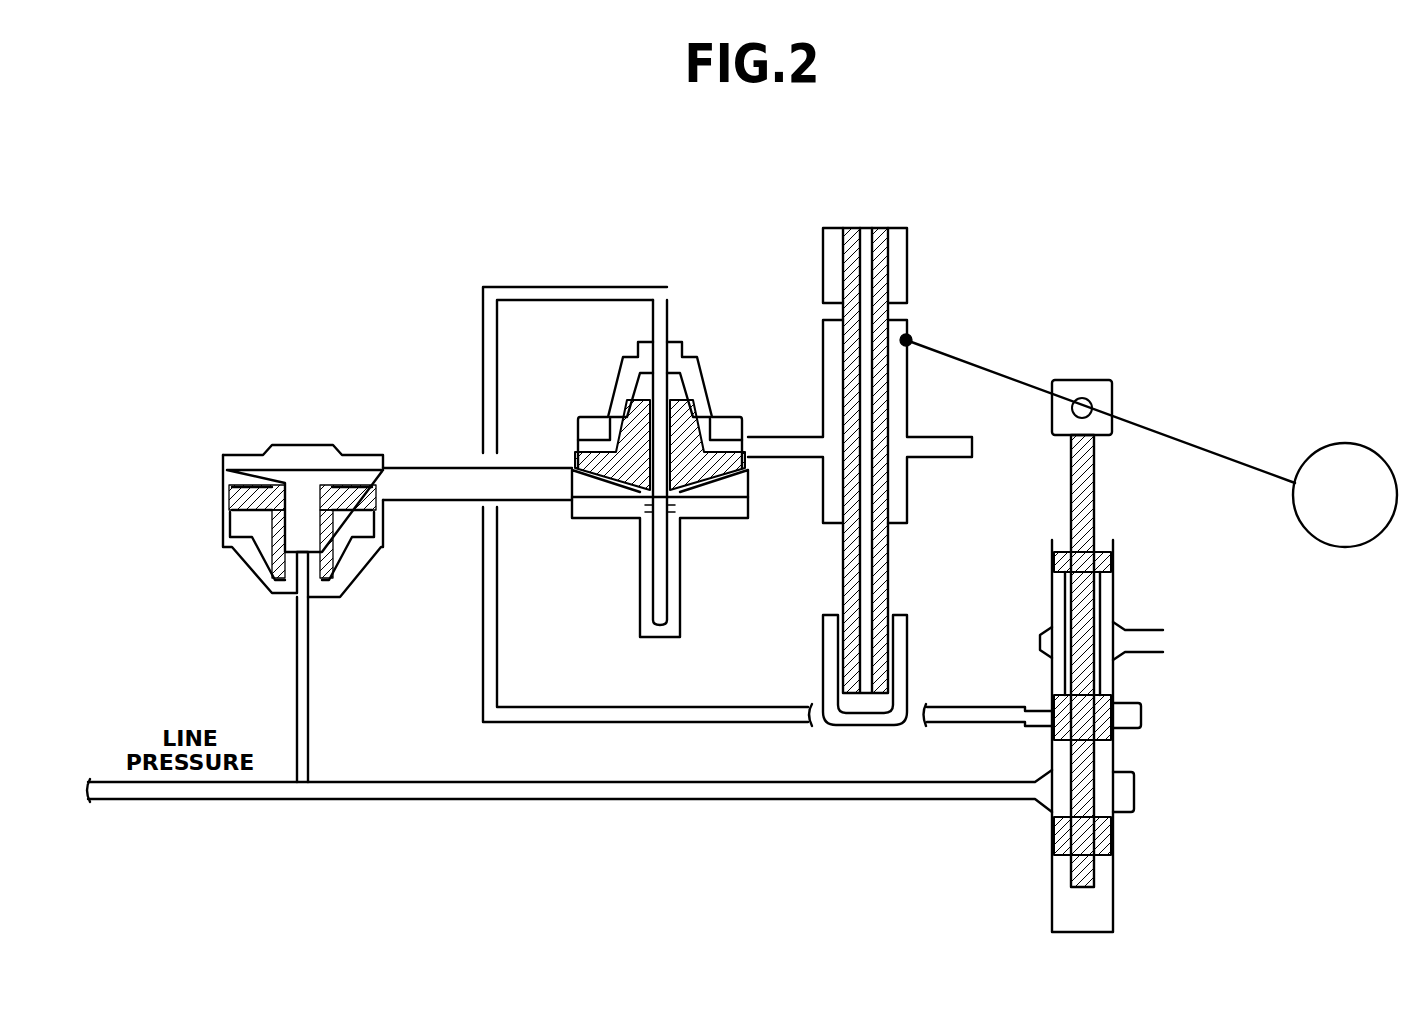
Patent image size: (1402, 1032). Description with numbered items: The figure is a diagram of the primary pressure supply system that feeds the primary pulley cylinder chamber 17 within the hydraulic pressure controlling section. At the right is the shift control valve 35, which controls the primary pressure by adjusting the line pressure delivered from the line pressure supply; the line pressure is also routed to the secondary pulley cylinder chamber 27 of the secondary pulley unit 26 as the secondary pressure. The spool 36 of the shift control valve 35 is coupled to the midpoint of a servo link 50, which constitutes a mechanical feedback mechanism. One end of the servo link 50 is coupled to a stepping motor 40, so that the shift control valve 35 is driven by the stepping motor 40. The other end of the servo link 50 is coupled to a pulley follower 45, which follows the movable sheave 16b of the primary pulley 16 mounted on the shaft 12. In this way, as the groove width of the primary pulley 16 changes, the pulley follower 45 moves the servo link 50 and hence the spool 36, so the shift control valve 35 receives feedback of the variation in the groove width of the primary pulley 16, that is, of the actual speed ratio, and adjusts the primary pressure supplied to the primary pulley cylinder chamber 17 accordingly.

The input shaft 12 is at (428, 466).
The primary pulley 16 is at (640, 414).
The movable sheave 16b is at (564, 463).
The primary pulley cylinder chamber 17 is at (630, 387).
The pulley cylinder 26 is at (275, 390).
The secondary pulley cylinder chamber 27 is at (350, 542).
The shift control valve 35 is at (1160, 762).
The spool 36 is at (1097, 500).
The stepping motor 40 is at (1340, 442).
The pulley follower 45 is at (820, 360).
The servo link 50 is at (1197, 438).